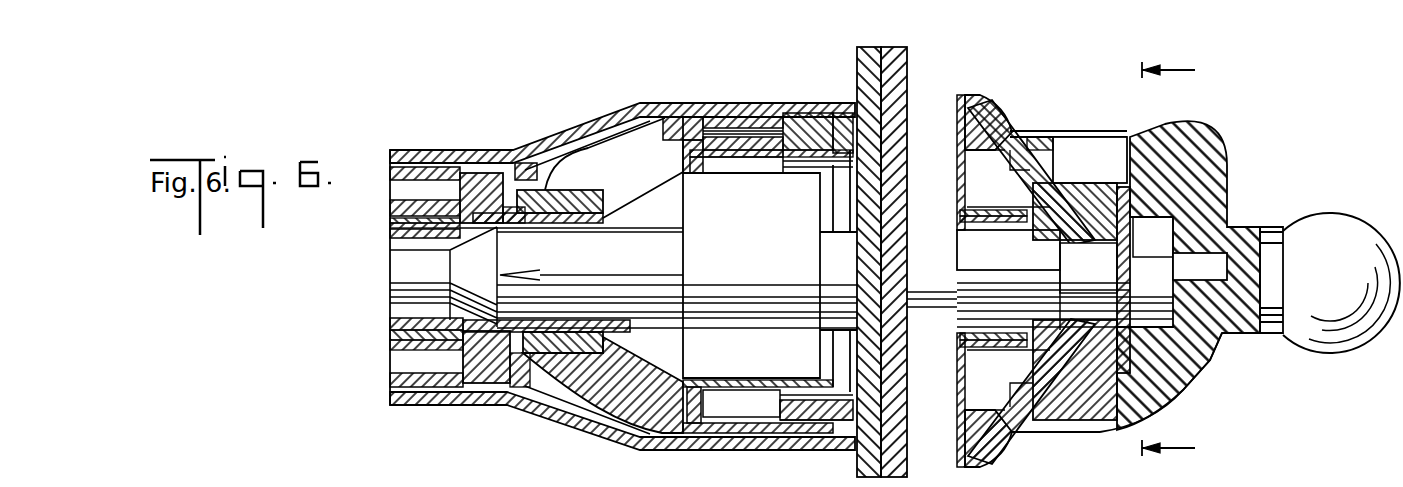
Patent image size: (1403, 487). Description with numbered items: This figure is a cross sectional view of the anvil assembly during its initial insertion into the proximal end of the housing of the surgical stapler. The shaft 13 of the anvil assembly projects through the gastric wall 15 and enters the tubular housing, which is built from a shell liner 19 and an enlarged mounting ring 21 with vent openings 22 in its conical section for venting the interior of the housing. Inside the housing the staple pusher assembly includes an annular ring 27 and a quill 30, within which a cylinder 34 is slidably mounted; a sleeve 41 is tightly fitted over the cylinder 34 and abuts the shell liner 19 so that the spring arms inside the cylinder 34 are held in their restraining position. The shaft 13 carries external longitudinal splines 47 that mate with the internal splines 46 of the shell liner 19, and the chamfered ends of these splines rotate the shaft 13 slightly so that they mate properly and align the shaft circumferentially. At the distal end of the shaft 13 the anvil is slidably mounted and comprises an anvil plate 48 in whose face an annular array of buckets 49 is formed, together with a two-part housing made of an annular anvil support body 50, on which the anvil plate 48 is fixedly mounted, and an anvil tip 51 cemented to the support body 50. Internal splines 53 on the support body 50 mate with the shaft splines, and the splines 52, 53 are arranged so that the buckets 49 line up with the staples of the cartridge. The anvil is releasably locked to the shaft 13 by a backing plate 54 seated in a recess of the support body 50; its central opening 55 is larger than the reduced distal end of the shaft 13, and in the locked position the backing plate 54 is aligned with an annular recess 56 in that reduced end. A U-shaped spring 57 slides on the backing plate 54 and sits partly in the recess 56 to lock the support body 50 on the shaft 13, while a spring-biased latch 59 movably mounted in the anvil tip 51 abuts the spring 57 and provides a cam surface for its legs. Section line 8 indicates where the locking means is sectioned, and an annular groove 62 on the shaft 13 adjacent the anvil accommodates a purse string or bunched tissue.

The section line 8- 8 is at (1153, 259).
The shaft 13 is at (768, 237).
The gastric wall 15 is at (907, 65).
The shell liner 19 is at (480, 190).
The mounting ring 21 is at (703, 105).
The vent openings 22 is at (537, 143).
The annular ring 27 is at (648, 372).
The quill 30 is at (392, 220).
The cylinder 34 is at (392, 238).
The sleeve 41 is at (390, 326).
The internal splines 46 is at (523, 224).
The longitudinal splines 47 is at (667, 277).
The anvil plate 48 is at (960, 160).
The buckets 49 is at (958, 432).
The anvil support body 50 is at (1000, 428).
The anvil tip 51 is at (1093, 431).
The splines 52 is at (967, 279).
The internal splines 53 is at (957, 240).
The backing plate 54 is at (1120, 183).
The central opening 55 is at (1128, 262).
The annular recess 56 is at (1120, 262).
The spring 57 is at (1135, 373).
The spring-biased latch 59 is at (1217, 151).
The annular groove 62 is at (932, 310).